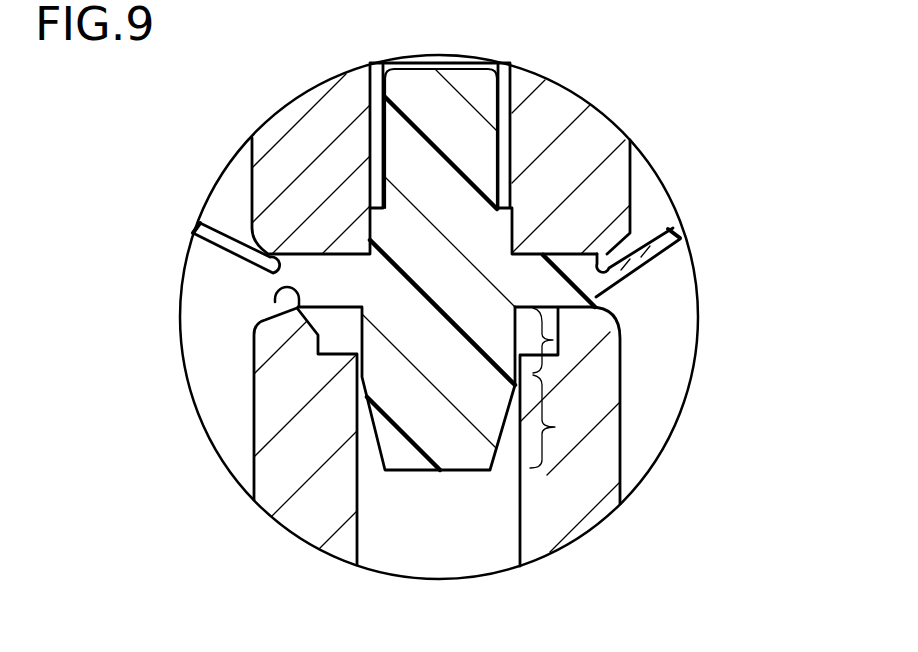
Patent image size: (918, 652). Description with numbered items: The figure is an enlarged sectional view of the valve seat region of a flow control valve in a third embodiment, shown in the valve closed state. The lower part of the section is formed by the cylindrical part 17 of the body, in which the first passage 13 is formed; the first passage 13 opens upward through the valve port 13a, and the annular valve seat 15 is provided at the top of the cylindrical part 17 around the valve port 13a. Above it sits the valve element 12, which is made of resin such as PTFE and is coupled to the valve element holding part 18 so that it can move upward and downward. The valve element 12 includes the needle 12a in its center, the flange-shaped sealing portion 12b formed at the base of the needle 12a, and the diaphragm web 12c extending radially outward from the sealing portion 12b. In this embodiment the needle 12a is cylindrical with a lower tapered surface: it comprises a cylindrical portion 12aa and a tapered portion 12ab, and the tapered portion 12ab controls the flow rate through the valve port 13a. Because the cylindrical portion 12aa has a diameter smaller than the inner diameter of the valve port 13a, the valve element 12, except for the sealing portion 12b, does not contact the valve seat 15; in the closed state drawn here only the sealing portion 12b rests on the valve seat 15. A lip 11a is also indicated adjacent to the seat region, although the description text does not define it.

The lip portion 11a is at (275, 296).
The valve element 12 is at (475, 258).
The needle 12a is at (467, 452).
The cylindrical portion 12aa is at (553, 340).
The tapered portion 12ab is at (555, 427).
The sealing portion 12b is at (577, 314).
The diaphragm web 12c is at (648, 253).
The first passage 13 is at (468, 520).
The valve port 13a is at (362, 495).
The valve seat 15 is at (326, 335).
The cylindrical part 17 is at (300, 497).
The valve element holding part 18 is at (282, 188).